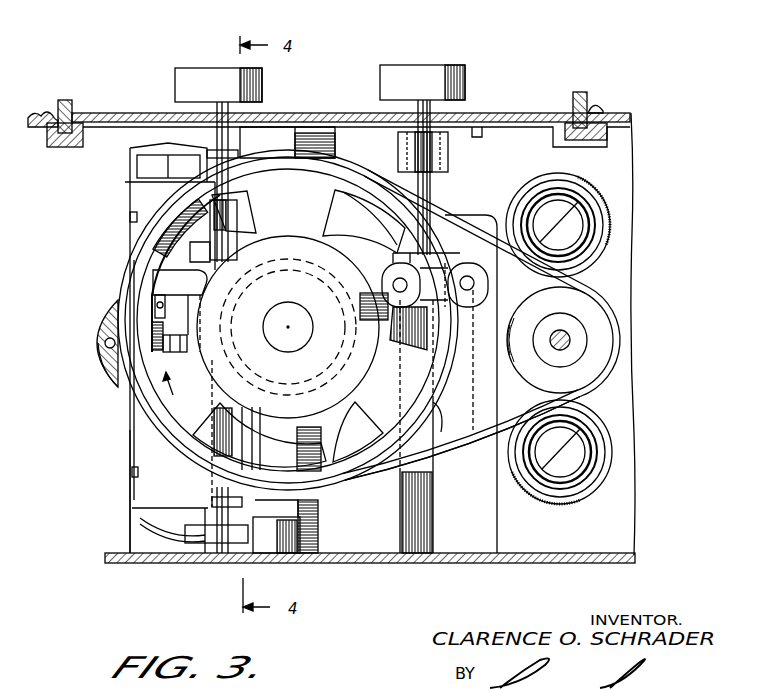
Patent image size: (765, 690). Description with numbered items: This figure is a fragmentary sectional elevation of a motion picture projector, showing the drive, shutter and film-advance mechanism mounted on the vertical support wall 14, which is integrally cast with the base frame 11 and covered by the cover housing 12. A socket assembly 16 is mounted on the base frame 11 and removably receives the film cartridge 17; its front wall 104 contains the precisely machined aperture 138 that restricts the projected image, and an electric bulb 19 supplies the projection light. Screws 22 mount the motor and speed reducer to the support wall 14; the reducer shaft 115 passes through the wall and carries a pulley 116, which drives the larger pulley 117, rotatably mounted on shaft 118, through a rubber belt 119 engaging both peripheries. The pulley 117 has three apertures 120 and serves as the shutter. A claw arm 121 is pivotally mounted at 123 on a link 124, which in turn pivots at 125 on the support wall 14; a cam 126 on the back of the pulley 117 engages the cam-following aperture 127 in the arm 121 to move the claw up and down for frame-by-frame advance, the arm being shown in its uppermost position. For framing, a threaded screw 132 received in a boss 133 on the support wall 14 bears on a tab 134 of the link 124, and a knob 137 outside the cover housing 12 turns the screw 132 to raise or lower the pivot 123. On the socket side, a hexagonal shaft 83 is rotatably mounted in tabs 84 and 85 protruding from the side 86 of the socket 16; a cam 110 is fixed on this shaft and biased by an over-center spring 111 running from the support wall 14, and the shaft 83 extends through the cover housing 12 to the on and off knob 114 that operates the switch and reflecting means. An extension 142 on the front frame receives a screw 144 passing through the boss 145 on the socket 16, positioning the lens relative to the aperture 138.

The base frame 11 is at (563, 563).
The cover housing 12 is at (531, 112).
The vertical support wall 14 is at (617, 520).
The socket assembly 16 is at (128, 200).
The film cartridge 17 is at (142, 172).
The electric bulb 19 is at (443, 413).
The screws 22 is at (572, 203).
The hexagonal shaft 83 is at (262, 113).
The tab 84 is at (212, 498).
The tab 85 is at (210, 153).
The side of socket 86 is at (212, 168).
The front wall of socket 104 is at (135, 447).
The cam 110 is at (198, 543).
The over-center spring 111 is at (300, 537).
The on and off knob 114 is at (196, 68).
The shaft 115 is at (568, 334).
The pulley 116 is at (598, 336).
The pulley 117 is at (367, 466).
The shaft 118 is at (290, 312).
The rubber belt 119 is at (468, 437).
The apertures 120 is at (240, 195).
The claw arm 121 is at (153, 280).
The pivot 123 is at (456, 333).
The link 124 is at (447, 243).
The pivot 125 is at (282, 237).
The cam 126 is at (238, 365).
The cam-following aperture 127 is at (254, 263).
The threaded screw 132 is at (433, 190).
The boss 133 is at (450, 155).
The tab 134 is at (367, 218).
The knob 137 is at (433, 68).
The aperture 138 is at (170, 348).
The extension 142 is at (98, 317).
The screw 144 is at (105, 341).
The boss 145 is at (98, 372).